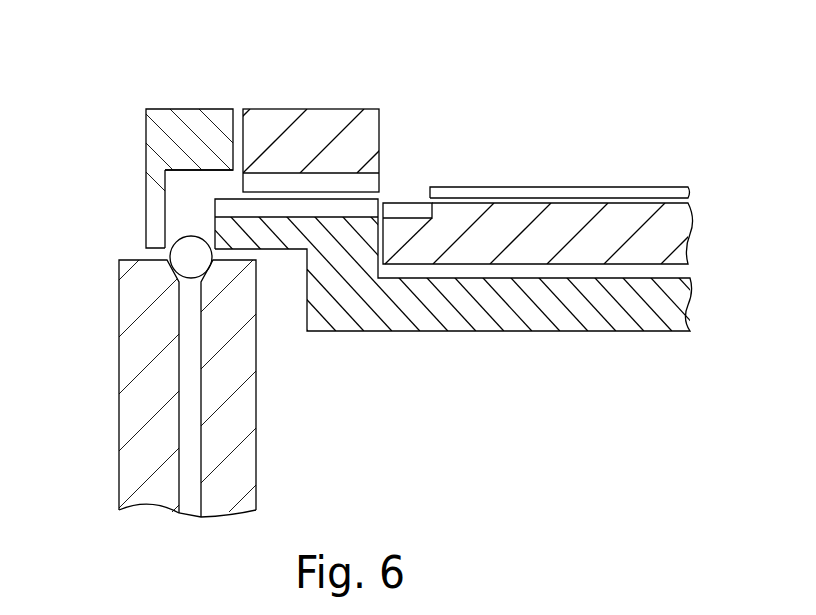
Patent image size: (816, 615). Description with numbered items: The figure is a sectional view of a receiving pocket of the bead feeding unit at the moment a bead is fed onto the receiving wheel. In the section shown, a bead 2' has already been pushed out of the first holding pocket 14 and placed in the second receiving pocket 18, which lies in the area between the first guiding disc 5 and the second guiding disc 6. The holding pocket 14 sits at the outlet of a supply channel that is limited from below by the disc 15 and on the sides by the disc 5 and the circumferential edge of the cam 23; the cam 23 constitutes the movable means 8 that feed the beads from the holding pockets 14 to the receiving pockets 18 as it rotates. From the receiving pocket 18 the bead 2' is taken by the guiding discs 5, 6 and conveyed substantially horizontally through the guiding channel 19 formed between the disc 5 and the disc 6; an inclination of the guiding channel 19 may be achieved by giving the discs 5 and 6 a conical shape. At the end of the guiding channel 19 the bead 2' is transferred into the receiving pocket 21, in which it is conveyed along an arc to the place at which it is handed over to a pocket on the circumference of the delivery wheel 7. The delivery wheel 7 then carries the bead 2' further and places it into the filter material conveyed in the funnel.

The bead 2' is at (114, 243).
The first guiding disc 5 is at (303, 100).
The second guiding disc 6 is at (205, 131).
The delivery wheel 7 is at (240, 402).
The movable means 8 is at (710, 155).
The first holding pocket 14 is at (431, 134).
The disc 15 is at (577, 236).
The second receiving pocket 18 is at (442, 294).
The guiding channel 19 is at (296, 294).
The receiving pocket 21 is at (129, 196).
The cam 23 is at (560, 150).